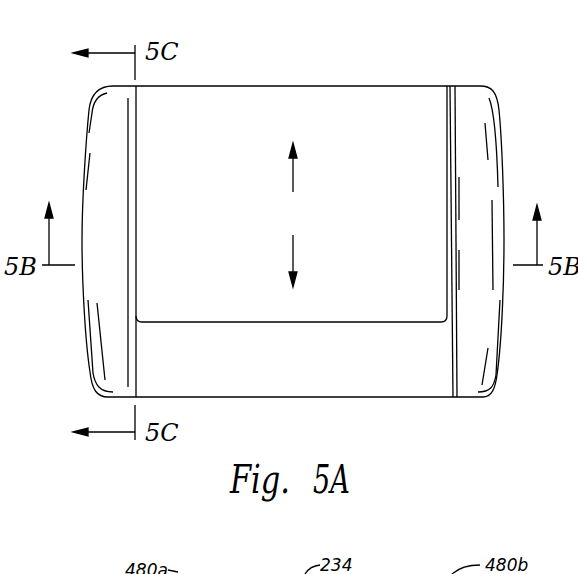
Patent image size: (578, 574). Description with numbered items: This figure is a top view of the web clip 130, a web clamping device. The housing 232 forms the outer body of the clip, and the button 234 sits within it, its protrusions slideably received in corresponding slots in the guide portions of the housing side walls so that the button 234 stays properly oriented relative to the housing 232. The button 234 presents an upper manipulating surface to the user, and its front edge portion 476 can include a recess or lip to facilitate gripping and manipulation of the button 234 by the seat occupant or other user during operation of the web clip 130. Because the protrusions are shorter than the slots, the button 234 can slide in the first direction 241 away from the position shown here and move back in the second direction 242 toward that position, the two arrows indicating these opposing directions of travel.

The web clip 130 is at (420, 47).
The button 234 is at (237, 102).
The front edge portion 476 is at (288, 86).
The housing 232 is at (395, 398).
The second direction 242 is at (293, 176).
The first direction 241 is at (293, 257).